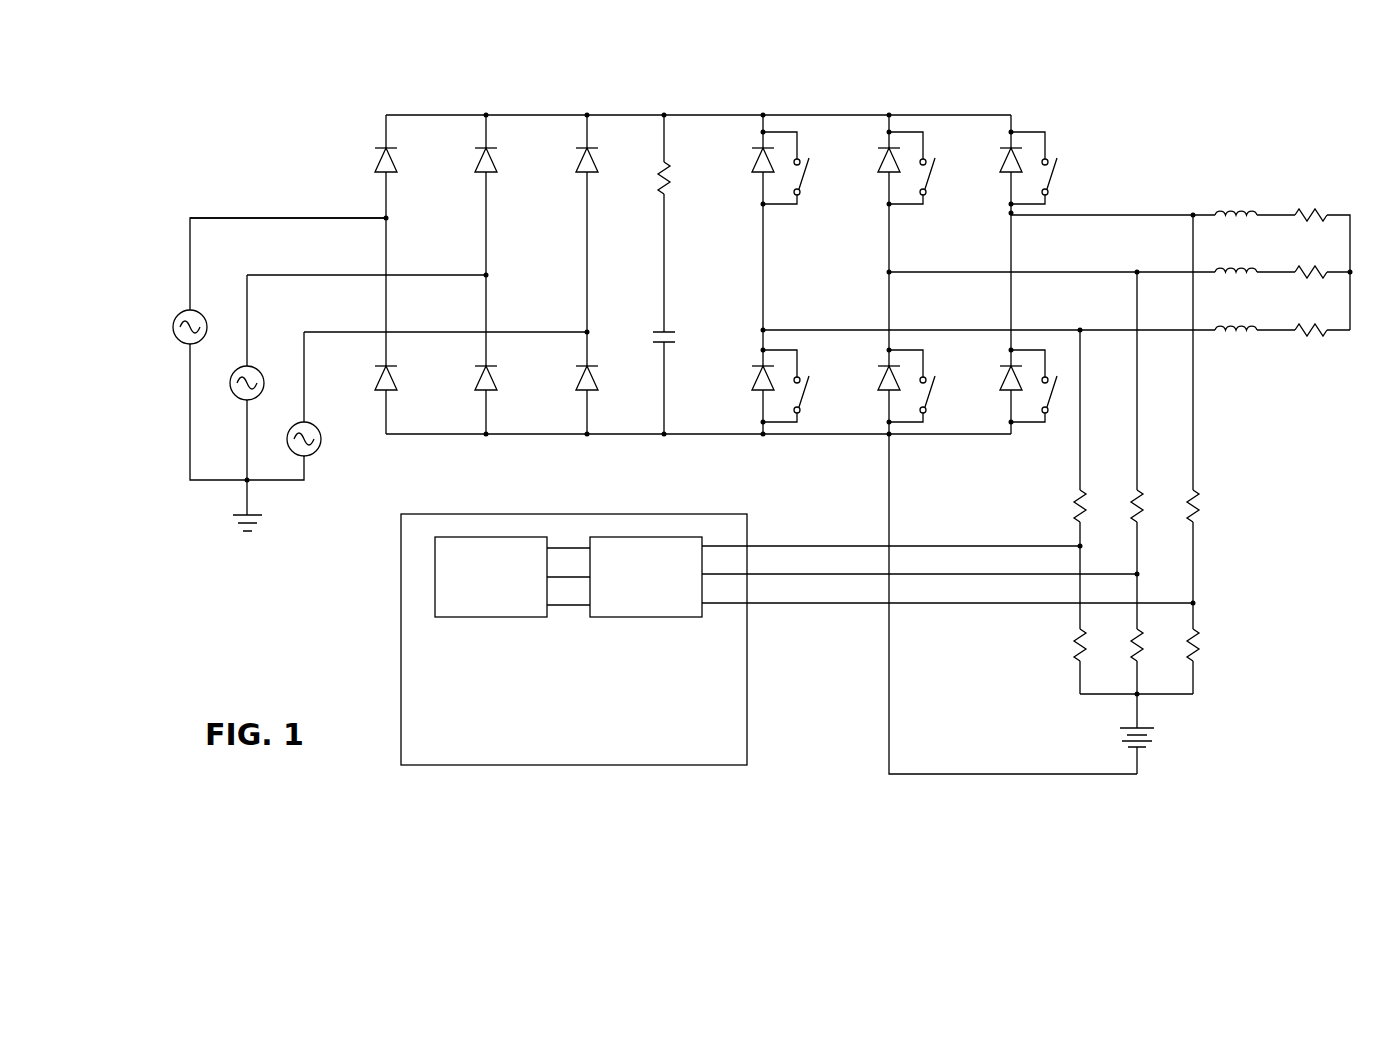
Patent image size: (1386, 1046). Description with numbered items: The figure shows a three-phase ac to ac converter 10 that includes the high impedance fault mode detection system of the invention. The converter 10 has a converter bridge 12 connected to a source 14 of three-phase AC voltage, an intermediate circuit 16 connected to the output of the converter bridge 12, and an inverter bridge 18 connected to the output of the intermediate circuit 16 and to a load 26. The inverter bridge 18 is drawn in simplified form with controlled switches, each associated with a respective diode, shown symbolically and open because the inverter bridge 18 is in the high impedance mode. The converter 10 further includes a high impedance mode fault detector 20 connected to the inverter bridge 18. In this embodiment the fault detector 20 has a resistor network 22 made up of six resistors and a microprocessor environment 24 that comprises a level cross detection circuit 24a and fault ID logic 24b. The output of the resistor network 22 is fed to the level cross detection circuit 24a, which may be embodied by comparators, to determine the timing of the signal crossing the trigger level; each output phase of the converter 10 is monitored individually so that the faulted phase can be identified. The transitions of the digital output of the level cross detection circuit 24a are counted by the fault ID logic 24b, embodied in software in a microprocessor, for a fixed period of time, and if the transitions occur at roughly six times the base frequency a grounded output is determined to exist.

The three-phase ac to ac converter 10 is at (1152, 152).
The converter bridge 12 is at (414, 114).
The source of three phase AC voltage 14 is at (183, 380).
The intermediate circuit 16 is at (678, 114).
The inverter bridge 18 is at (865, 114).
The high impedance mode fault detector 20 is at (1011, 826).
The resistor network 22 is at (1167, 618).
The microprocessor environment 24 is at (425, 672).
The level cross detection circuit 24a is at (655, 537).
The fault ID logic 24b is at (435, 575).
The load 26 is at (1272, 191).